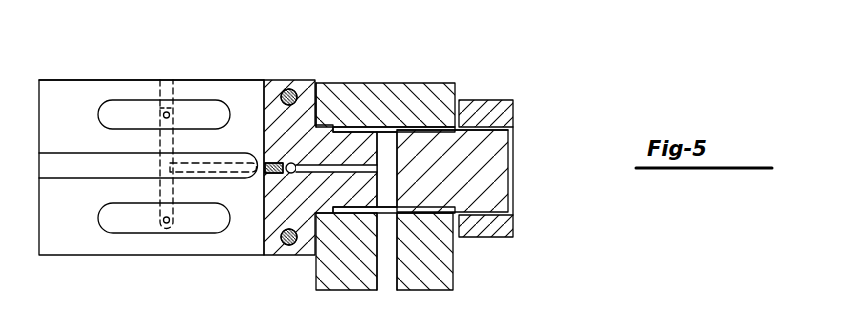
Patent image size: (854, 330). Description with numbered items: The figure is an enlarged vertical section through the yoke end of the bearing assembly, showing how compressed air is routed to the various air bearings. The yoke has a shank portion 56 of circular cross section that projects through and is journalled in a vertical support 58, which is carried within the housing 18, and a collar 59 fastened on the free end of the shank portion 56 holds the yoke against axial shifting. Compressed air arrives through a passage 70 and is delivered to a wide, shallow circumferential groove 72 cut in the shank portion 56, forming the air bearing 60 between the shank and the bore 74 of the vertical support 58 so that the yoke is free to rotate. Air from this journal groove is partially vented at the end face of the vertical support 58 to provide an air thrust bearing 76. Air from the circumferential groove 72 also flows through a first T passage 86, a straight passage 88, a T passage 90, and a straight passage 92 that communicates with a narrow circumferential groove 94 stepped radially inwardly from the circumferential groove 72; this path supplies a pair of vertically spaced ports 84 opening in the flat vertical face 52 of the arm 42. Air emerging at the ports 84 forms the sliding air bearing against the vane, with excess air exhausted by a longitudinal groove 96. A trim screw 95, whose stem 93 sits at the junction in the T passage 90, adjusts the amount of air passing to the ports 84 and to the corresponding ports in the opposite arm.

The arm 42 is at (39, 108).
The flat vertical face 52 is at (54, 121).
The ports 84 is at (127, 103).
The longitudinal groove 96 is at (47, 172).
The T passage 90 is at (261, 155).
The straight passage 88 is at (205, 170).
The first T passage 86 is at (160, 192).
The straight passage 92 is at (264, 125).
The trim screw 95 is at (268, 176).
The air thrust bearing 76 is at (315, 100).
The air bearing 60 is at (413, 122).
The circumferential groove 72 is at (348, 115).
The bore 74 is at (428, 105).
The stem 93 is at (390, 178).
The shank portion 56 is at (500, 170).
The housing 18 is at (462, 117).
The collar 59 is at (513, 124).
The vertical support 58 is at (456, 93).
The passage 70 is at (390, 252).
The narrow circumferential groove 94 is at (380, 237).